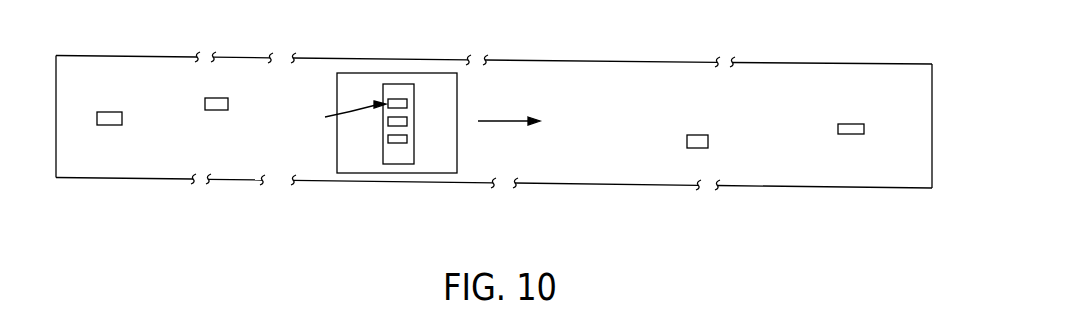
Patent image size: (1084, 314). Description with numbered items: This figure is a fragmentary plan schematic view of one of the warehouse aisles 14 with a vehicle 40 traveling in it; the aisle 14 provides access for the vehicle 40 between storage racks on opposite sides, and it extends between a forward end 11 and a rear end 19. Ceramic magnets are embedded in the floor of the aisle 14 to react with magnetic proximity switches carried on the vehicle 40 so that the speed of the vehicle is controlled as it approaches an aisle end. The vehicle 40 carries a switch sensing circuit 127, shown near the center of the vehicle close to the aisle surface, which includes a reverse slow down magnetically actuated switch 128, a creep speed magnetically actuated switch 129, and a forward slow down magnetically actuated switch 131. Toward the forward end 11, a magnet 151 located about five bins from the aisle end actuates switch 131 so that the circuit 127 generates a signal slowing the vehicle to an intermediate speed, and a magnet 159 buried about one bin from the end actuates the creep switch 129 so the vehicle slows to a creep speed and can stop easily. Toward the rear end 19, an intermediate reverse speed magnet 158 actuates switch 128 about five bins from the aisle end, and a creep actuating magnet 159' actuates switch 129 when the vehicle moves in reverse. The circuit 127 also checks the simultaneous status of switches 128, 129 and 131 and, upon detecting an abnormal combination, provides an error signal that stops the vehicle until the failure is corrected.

The aisle 14 is at (570, 85).
The rear end of the aisle 19 is at (56, 162).
The forward end of the aisle 11 is at (932, 158).
The vehicle 40 is at (384, 64).
The switch sensing circuit 127 is at (336, 119).
The reverse slow down magnetically actuated switch 128 is at (405, 102).
The creep speed magnetically actuated switch 129 is at (408, 122).
The forward slow down magnetically actuated switch 131 is at (397, 143).
The magnet 151 is at (687, 142).
The intermediate reverse speed magnet 158 is at (225, 100).
The magnet 159 is at (840, 109).
The creep actuating magnet 159' is at (119, 97).